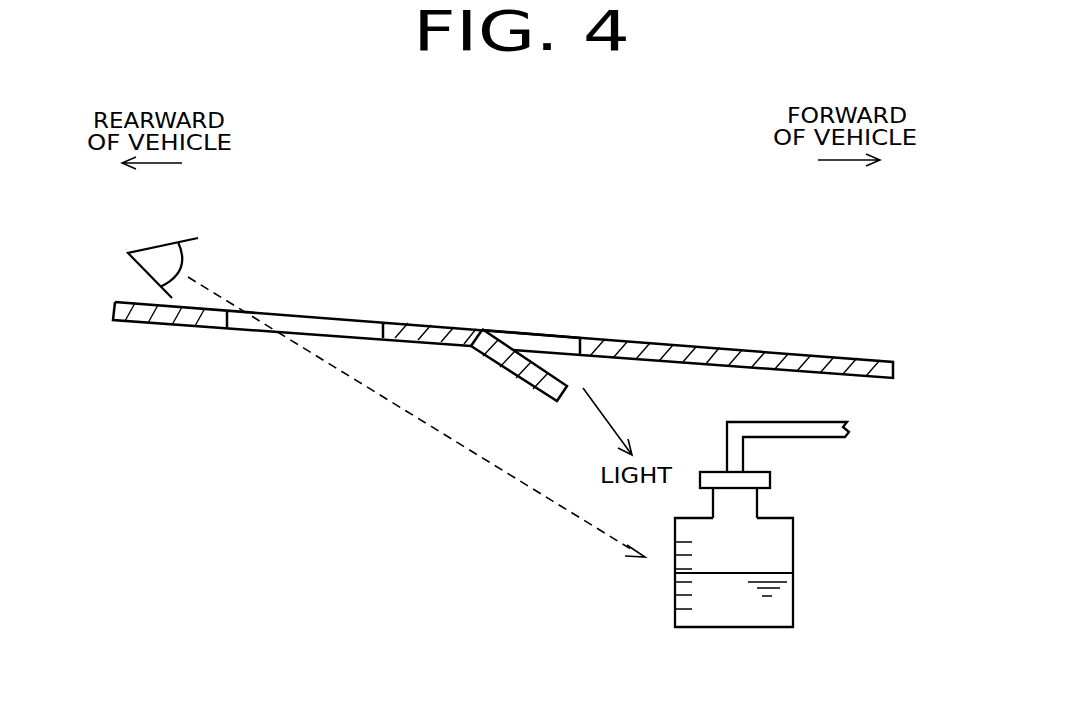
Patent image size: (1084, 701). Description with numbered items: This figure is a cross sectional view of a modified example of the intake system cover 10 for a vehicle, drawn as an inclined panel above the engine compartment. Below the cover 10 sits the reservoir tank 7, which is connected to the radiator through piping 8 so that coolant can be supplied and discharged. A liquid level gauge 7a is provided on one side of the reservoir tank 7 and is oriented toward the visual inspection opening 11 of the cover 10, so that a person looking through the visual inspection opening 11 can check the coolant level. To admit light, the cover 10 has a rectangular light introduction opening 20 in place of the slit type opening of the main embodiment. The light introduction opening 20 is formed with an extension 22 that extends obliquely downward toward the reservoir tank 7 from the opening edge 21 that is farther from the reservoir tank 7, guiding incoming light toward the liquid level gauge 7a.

The reservoir tank 7 is at (793, 548).
The liquid level gauge 7a is at (687, 573).
The piping 8 is at (820, 438).
The intake system cover 10 is at (820, 355).
The visual inspection opening 11 is at (375, 323).
The light introduction opening 20 is at (573, 338).
The opening edge 21 is at (482, 326).
The extension 22 is at (512, 378).